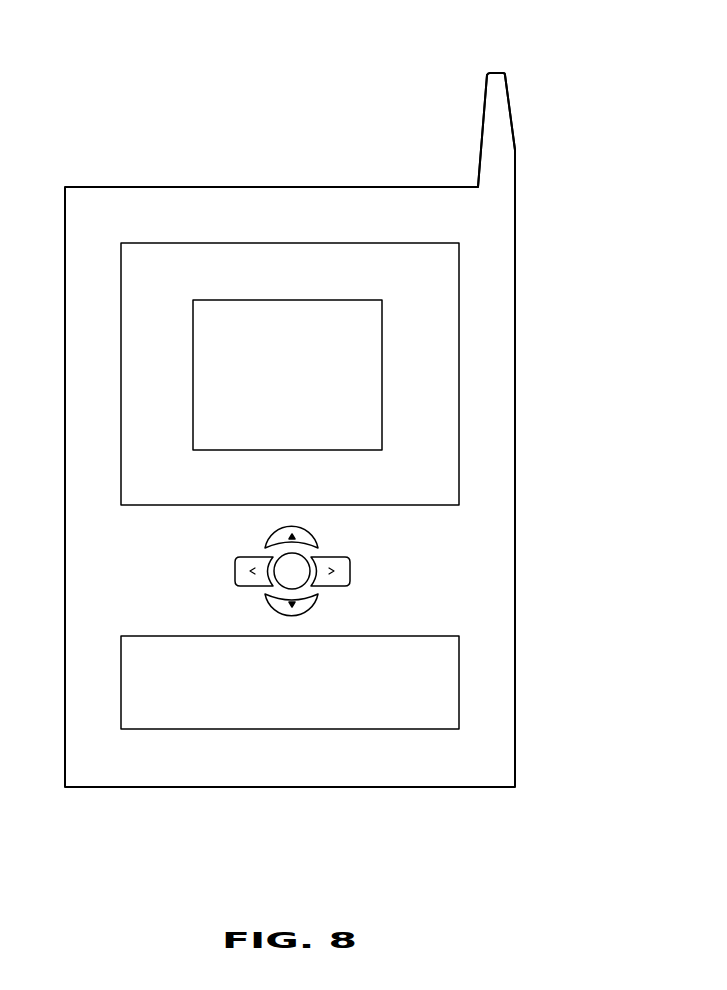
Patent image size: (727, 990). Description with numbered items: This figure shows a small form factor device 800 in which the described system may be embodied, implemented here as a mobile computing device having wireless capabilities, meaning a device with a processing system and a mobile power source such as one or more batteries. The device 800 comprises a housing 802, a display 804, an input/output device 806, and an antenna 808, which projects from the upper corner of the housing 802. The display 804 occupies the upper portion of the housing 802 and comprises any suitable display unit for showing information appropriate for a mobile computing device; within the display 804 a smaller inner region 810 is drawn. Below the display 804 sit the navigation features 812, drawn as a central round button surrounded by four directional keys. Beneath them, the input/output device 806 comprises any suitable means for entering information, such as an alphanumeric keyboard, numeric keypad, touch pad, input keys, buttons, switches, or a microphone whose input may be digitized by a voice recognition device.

The small form factor device 800 is at (141, 92).
The housing 802 is at (515, 440).
The display 804 is at (460, 261).
The input/output (I/O) device 806 is at (460, 668).
The antenna 808 is at (485, 98).
The display window 810 is at (382, 356).
The navigation features 812 is at (359, 596).